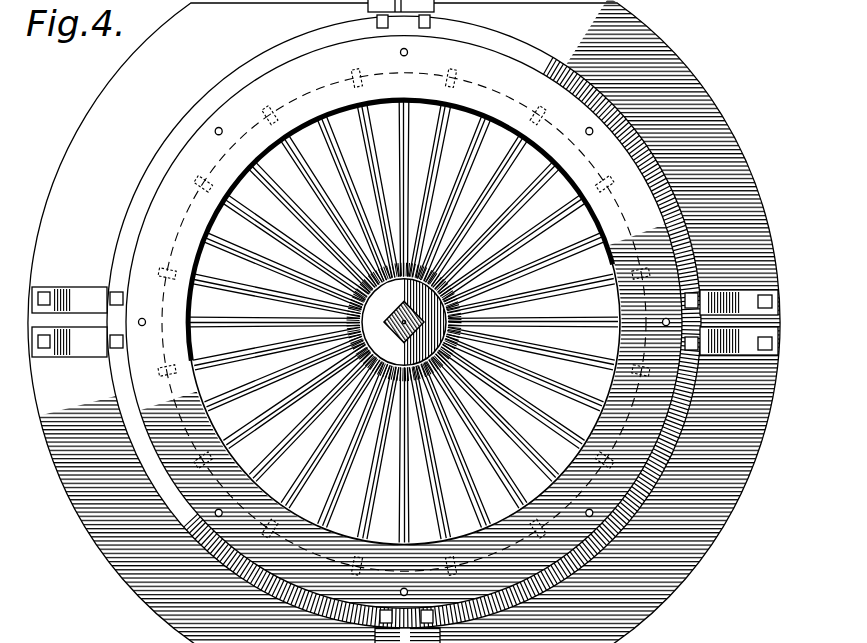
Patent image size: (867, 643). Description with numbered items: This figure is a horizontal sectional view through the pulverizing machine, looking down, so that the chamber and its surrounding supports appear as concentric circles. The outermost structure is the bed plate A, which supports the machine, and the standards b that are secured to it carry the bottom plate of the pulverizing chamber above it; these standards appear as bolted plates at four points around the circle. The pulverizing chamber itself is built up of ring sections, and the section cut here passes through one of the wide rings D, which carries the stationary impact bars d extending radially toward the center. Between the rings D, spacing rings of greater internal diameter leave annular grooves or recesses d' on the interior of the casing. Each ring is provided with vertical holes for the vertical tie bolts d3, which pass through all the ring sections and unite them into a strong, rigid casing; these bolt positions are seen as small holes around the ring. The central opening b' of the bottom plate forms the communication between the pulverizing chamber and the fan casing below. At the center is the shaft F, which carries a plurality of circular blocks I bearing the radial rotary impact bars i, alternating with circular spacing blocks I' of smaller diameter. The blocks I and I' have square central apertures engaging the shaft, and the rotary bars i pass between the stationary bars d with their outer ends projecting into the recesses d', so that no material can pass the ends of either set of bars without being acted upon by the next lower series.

The bed plate A is at (404, 321).
The standards b is at (416, 321).
The wide rings D is at (556, 366).
The stationary impact bars d is at (497, 416).
The annular grooves or recesses d' is at (418, 457).
The vertical tie bolts d3 is at (659, 320).
The central opening b' is at (475, 435).
The shaft F is at (293, 335).
The circular blocks I is at (332, 432).
The circular spacing blocks I' is at (277, 289).
The radial impact bars i is at (373, 489).